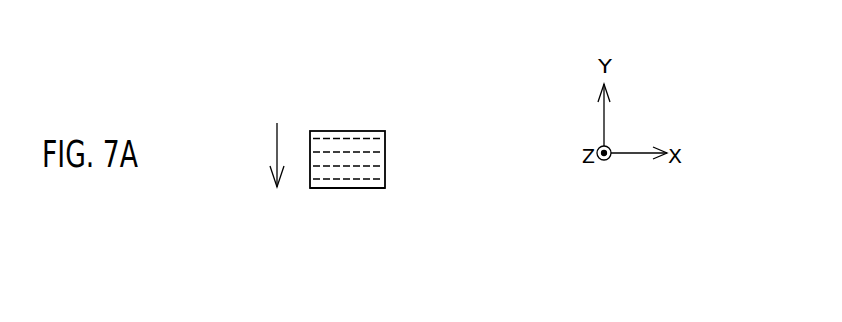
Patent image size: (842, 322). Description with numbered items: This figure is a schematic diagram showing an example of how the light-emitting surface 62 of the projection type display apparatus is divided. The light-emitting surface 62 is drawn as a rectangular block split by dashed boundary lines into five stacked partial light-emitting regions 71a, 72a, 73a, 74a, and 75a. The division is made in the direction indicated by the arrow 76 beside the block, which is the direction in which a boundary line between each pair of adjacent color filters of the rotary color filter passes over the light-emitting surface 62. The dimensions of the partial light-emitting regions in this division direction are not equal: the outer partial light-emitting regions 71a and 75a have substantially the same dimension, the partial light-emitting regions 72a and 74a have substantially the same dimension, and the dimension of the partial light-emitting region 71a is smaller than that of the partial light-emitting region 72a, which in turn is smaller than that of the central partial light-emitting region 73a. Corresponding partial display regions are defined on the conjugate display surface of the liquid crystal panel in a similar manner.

The light-emitting surface 62 is at (342, 129).
The partial light-emitting region 71a is at (375, 130).
The partial light-emitting region 72a is at (385, 143).
The partial light-emitting region 73a is at (385, 157).
The partial light-emitting region 74a is at (385, 168).
The partial light-emitting region 75a is at (380, 184).
The arrow 76 is at (277, 147).